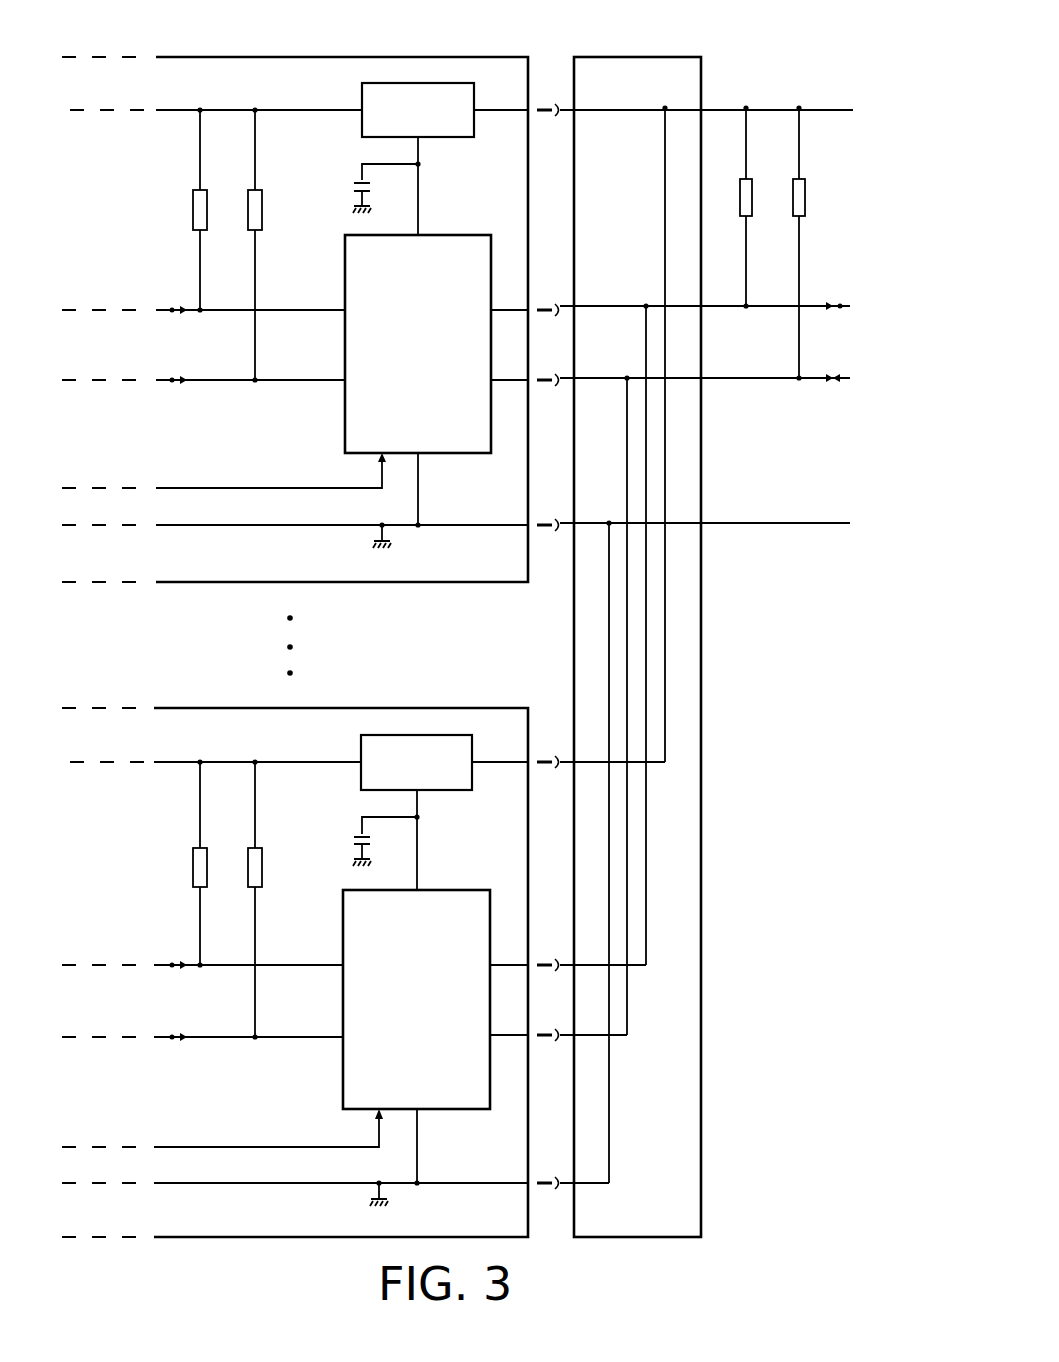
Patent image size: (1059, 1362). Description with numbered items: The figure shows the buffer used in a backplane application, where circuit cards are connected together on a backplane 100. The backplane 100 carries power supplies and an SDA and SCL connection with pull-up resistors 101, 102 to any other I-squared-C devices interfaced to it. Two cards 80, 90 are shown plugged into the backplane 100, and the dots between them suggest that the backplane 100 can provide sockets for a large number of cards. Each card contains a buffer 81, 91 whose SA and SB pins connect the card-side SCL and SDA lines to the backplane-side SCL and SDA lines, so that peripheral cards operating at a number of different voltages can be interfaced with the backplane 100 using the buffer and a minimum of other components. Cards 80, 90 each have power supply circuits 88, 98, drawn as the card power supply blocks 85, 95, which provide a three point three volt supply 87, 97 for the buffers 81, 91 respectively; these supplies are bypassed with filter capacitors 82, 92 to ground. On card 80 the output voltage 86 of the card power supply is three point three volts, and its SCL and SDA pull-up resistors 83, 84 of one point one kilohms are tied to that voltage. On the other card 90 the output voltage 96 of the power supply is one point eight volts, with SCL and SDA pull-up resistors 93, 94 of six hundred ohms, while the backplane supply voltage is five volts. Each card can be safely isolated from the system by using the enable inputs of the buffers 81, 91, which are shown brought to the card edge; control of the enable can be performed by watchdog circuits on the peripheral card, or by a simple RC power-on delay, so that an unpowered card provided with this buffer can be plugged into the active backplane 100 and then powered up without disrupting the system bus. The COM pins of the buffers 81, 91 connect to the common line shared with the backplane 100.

The card 80 is at (166, 51).
The buffer 81 is at (450, 234).
The filter capacitor 82 is at (352, 184).
The pull-up resistor 83 is at (263, 208).
The pull-up resistor 84 is at (208, 212).
The card power supply of first card 85 is at (358, 82).
The output voltage 86 is at (316, 110).
The 3.3 volt supply 87 is at (427, 146).
The power supply circuit 88 is at (478, 118).
The card 90 is at (162, 702).
The buffer 91 is at (448, 889).
The filter capacitor 92 is at (352, 839).
The pull-up resistor 93 is at (263, 866).
The pull-up resistor 94 is at (207, 870).
The card power supply of second card 95 is at (378, 734).
The output voltage 96 is at (318, 762).
The 3.3 volt supply 97 is at (427, 798).
The power supply circuit 98 is at (476, 770).
The backplane 100 is at (710, 63).
The pull-up resistor 101 is at (776, 180).
The pull-up resistor 102 is at (806, 193).